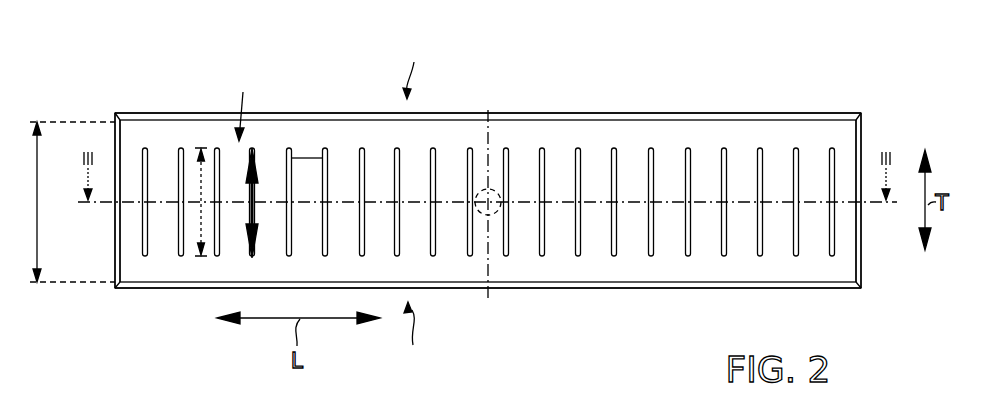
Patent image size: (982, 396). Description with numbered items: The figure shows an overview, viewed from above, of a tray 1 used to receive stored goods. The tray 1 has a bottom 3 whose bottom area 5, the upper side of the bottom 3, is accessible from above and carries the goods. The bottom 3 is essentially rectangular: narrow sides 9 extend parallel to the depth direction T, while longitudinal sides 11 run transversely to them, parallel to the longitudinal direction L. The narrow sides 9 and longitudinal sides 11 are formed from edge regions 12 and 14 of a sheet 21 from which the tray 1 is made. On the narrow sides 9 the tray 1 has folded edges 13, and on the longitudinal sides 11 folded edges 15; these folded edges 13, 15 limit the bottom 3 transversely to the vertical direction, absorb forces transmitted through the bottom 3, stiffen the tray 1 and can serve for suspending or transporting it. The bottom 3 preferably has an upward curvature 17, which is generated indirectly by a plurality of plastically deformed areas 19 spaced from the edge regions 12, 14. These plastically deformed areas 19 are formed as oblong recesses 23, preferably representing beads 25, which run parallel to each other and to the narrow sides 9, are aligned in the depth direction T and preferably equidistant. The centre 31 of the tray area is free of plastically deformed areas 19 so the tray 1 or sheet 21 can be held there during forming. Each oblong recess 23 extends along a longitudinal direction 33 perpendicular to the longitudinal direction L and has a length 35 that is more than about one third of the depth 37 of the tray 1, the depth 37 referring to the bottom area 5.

The tray 1 is at (752, 88).
The bottom 3 is at (168, 131).
The bottom area 5 is at (242, 104).
The narrow sides 9 is at (115, 139).
The longitudinal sides 11 is at (702, 119).
The edge regions 12 is at (100, 260).
The folded edges 13 is at (117, 219).
The edge regions 14 is at (415, 204).
The folded edges 15 is at (538, 118).
The curvature 17 is at (450, 165).
The plastically deformed areas 19 is at (364, 167).
The sheet 21 is at (307, 143).
The oblong recesses 23 is at (579, 257).
The beads 25 is at (689, 258).
The centre 31 is at (494, 188).
The longitudinal directions 33 is at (253, 190).
The length 35 is at (201, 180).
The depth 37 is at (40, 185).